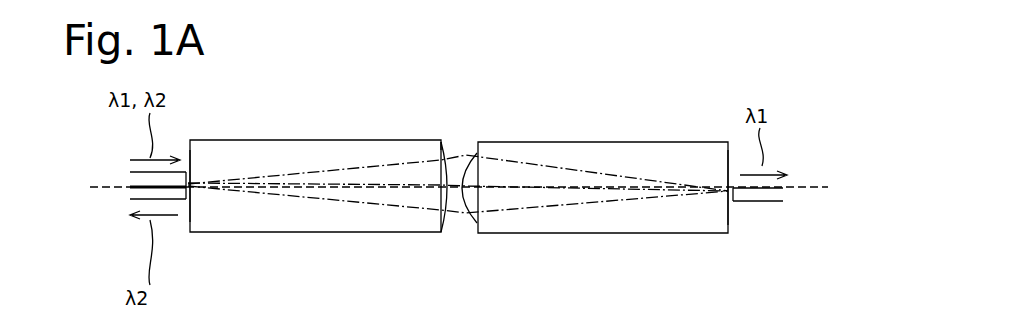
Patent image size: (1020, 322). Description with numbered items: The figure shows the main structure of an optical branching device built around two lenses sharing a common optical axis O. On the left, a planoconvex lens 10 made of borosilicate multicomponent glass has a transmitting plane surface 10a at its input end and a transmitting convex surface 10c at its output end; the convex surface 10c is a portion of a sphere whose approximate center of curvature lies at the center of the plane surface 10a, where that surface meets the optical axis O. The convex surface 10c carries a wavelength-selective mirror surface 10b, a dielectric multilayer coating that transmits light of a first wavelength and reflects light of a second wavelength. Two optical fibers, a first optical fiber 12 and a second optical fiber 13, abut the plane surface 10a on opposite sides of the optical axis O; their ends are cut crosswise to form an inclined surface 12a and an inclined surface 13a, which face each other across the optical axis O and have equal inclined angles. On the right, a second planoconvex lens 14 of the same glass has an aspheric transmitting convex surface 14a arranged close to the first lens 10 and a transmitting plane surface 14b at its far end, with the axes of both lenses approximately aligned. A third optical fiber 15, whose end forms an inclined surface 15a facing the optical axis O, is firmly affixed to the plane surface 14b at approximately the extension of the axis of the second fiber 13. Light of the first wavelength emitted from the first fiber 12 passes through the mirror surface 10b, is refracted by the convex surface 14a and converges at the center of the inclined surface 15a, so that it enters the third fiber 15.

The planoconvex lens 10 is at (306, 240).
The transmitting plane surface 10a is at (190, 214).
The wavelength-selective mirror surface 10b is at (446, 218).
The transmitting convex surface 10c is at (444, 150).
The optical fiber 12 is at (131, 176).
The inclined surface 12a is at (196, 176).
The optical fiber 13 is at (131, 194).
The inclined surface 13a is at (196, 198).
The planoconvex lens 14 is at (606, 240).
The transmitting convex surface 14a is at (469, 156).
The transmitting plane surface 14b is at (727, 206).
The optical fiber 15 is at (784, 200).
The inclined surface 15a is at (728, 186).
The optical axis O is at (818, 184).